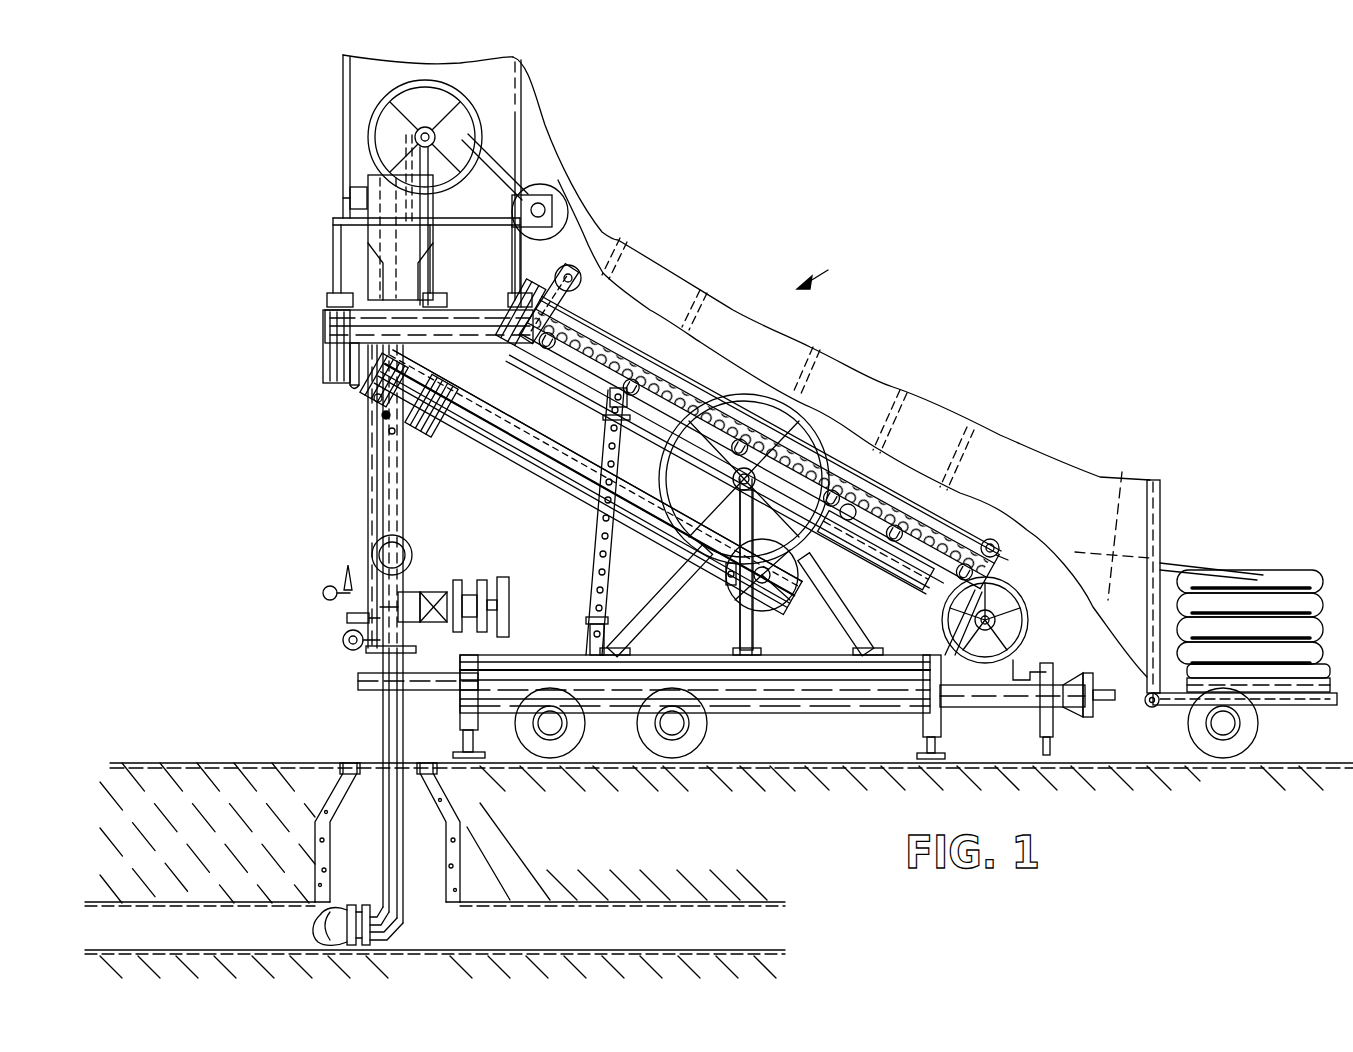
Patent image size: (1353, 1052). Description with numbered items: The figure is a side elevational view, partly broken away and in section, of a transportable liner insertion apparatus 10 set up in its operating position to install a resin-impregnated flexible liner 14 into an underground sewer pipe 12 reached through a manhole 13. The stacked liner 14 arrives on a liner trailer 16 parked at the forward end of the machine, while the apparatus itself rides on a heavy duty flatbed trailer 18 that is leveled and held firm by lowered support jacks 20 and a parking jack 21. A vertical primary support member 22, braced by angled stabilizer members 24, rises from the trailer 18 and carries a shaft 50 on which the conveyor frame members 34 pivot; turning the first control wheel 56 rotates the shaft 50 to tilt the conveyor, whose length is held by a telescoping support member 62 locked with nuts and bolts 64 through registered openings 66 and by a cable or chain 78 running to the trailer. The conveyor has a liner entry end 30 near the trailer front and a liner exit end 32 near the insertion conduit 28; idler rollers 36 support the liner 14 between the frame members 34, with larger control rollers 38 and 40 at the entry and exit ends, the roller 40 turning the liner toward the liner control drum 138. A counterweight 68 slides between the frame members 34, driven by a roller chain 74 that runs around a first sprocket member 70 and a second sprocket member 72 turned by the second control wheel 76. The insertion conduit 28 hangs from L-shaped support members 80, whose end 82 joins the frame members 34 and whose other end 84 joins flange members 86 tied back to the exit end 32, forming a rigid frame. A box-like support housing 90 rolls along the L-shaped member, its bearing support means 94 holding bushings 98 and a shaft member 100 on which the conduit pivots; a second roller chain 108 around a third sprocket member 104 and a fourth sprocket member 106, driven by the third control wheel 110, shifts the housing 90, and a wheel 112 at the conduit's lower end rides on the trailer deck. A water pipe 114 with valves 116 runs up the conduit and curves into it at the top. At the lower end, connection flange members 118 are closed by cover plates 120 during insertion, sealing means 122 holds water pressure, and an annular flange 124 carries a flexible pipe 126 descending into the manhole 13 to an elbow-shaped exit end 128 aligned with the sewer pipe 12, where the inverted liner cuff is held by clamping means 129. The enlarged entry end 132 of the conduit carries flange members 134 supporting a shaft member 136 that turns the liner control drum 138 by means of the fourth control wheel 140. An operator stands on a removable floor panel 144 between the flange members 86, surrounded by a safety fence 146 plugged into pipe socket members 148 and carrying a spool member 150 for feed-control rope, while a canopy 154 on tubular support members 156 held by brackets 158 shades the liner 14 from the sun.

The liner insertion apparatus 10 is at (827, 272).
The sewer pipe 12 is at (222, 898).
The manhole 13 is at (313, 845).
The liner 14 is at (1258, 576).
The liner trailer 16 is at (1288, 697).
The flatbed trailer 18 is at (780, 705).
The support jacks 20 is at (462, 710).
The parking jack 21 is at (1060, 715).
The primary support members 22 is at (755, 625).
The stabilizer members 24 is at (668, 600).
The insertion conduit 28 is at (367, 482).
The liner entry end 30 is at (972, 552).
The liner exit end 32 is at (582, 306).
The frame members 34 is at (612, 333).
The idler rollers 36 is at (712, 385).
The control roller 38 is at (1000, 554).
The control roller 40 is at (560, 268).
The shaft 50 is at (735, 478).
The first control wheel 56 is at (642, 447).
The telescoping support members 62 is at (597, 556).
The nuts and bolts 64 is at (607, 517).
The openings 66 is at (608, 420).
The counterweight 68 is at (992, 542).
The first sprocket member 70 is at (776, 450).
The second sprocket member 72 is at (1022, 596).
The roller chain 74 is at (893, 585).
The second control wheel 76 is at (1028, 624).
The cable or chain 78 is at (955, 653).
The L-shaped support members 80 is at (487, 440).
The end of L-shaped support member 82 is at (760, 508).
The other end of L-shaped support member 84 is at (350, 372).
The flange members 86 is at (463, 322).
The support housing 90 is at (410, 427).
The bearing support means 94 is at (375, 397).
The bushings 98 is at (383, 416).
The shaft member 100 is at (390, 432).
The third sprocket member 104 is at (323, 338).
The fourth sprocket member 106 is at (772, 570).
The second roller chain 108 is at (460, 392).
The third control wheel 110 is at (720, 585).
The wheel 112 is at (343, 640).
The water pipe 114 is at (373, 515).
The valves 116 is at (352, 196).
The connection flange members 118 is at (375, 547).
The cover plates 120 is at (400, 554).
The sealing means 122 is at (470, 590).
The annular flange 124 is at (366, 650).
The flexible pipe 126 is at (383, 717).
The exit end 128 is at (380, 947).
The clamping means 129 is at (352, 905).
The entry end 132 is at (370, 212).
The flange members 134 is at (430, 210).
The shaft member 136 is at (467, 124).
The liner control drum 138 is at (433, 125).
The fourth control wheel 140 is at (422, 82).
The floor panel 144 is at (465, 310).
The safety fence 146 is at (334, 245).
The pipe socket members 148 is at (448, 295).
The spool member 150 is at (552, 195).
The canopy 154 is at (1000, 455).
The tubular support members 156 is at (716, 313).
The brackets 158 is at (851, 517).